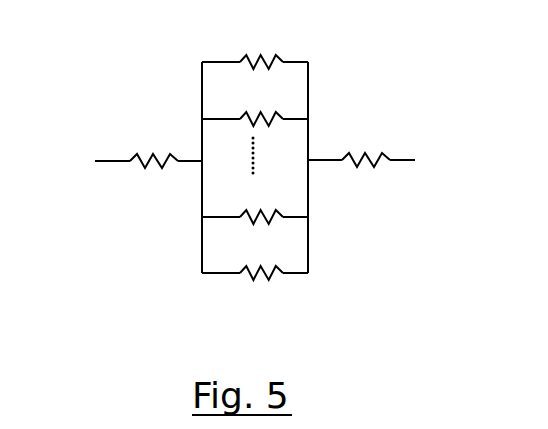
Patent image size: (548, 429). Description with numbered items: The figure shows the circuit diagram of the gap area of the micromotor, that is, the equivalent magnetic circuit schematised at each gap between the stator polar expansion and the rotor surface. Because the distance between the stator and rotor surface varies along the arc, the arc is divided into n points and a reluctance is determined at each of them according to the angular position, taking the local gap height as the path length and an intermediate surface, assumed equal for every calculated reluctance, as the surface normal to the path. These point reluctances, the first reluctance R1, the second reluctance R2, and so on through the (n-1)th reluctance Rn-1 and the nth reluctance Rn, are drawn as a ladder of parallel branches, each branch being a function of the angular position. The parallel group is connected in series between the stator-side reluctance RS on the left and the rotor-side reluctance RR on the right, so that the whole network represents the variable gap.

The first gap reluctance R1 is at (255, 50).
The second gap reluctance R2 is at (255, 107).
The (n-1)th gap reluctance Rn-1 is at (255, 197).
The nth gap reluctance Rn is at (255, 253).
The stator-side reluctance RS is at (139, 150).
The rotor-side reluctance RR is at (361, 146).